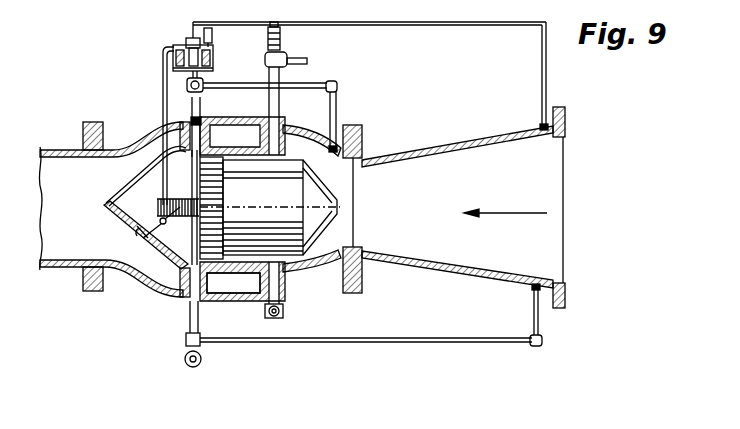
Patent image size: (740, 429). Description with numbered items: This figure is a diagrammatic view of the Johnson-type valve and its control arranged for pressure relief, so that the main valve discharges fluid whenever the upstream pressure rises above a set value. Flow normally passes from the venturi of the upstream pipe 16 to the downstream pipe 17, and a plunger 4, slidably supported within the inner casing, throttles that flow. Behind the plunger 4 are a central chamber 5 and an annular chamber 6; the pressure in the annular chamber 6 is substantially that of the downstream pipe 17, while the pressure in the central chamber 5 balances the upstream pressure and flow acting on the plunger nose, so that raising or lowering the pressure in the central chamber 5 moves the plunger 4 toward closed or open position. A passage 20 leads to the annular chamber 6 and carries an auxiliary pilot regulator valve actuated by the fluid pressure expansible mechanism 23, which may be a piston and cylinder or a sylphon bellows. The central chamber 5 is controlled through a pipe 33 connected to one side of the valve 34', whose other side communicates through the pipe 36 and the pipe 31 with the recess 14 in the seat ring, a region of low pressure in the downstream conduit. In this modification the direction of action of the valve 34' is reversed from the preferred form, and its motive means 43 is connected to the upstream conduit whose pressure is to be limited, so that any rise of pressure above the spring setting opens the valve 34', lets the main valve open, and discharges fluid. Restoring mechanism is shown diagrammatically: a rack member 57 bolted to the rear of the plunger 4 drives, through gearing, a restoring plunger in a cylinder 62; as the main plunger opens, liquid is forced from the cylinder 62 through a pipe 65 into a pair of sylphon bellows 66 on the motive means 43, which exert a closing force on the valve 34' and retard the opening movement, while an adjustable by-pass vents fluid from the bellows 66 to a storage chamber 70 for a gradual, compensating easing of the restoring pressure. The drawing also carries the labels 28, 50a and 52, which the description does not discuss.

The downstream pipe 17 is at (114, 209).
The central chamber 5 is at (150, 207).
The rack member 57 is at (194, 197).
The cylinder 62 is at (158, 234).
The pipe 65 is at (162, 96).
The sylphon bellows 66 is at (175, 60).
The fluid pressure actuating means 43 is at (189, 40).
The storage chamber 70 is at (212, 36).
The pipe 33 is at (191, 105).
The valve 34' is at (209, 89).
The passage 20 is at (275, 128).
The fluid pressure expansible mechanism 23 is at (283, 33).
The fitting 28 is at (292, 62).
The pipe 36 is at (305, 85).
The pipe 31 is at (337, 115).
The recess 14 is at (358, 156).
The pressure line 50a is at (478, 23).
The upstream pipe 16 is at (463, 207).
The plunger 4 is at (318, 230).
The annular chamber 6 is at (240, 268).
The pipe 52 is at (384, 340).